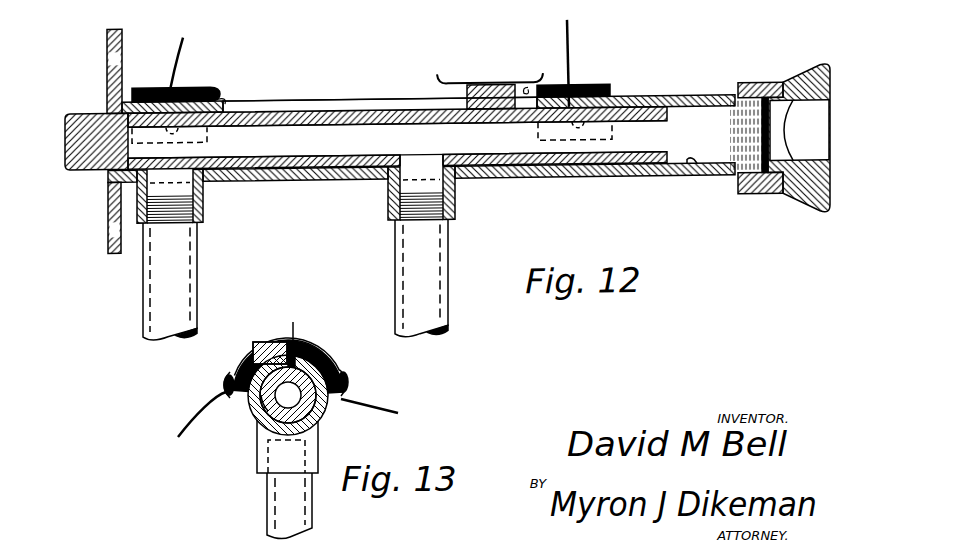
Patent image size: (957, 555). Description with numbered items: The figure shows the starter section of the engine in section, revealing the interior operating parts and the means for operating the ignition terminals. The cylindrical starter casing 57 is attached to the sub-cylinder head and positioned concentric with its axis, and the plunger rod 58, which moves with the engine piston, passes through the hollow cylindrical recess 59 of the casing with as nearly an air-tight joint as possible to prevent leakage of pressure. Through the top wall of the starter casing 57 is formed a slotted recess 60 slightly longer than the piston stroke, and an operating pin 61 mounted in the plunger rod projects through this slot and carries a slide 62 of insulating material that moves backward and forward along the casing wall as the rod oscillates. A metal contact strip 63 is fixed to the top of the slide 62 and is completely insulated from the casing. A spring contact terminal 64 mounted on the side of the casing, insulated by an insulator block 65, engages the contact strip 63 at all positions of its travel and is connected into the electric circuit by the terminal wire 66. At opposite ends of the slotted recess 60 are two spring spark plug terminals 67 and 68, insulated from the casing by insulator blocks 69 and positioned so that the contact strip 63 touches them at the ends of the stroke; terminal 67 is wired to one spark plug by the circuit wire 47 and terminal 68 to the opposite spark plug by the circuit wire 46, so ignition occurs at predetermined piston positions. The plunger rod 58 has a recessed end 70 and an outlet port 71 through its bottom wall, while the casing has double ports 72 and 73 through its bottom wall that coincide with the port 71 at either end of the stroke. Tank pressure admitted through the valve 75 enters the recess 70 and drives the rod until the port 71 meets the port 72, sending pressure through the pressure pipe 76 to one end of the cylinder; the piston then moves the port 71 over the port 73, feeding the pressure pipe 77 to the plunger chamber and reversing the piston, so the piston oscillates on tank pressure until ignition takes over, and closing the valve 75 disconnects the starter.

In FIG. 12, the circuit wire 46 is at (184, 43).
In FIG. 13, the circuit wire 46 is at (386, 402).
In FIG. 12, the circuit wire 47 is at (569, 36).
In FIG. 12, the starter casing 57 is at (668, 107).
In FIG. 13, the starter casing 57 is at (322, 410).
In FIG. 12, the plunger rod 58 is at (668, 135).
In FIG. 13, the plunger rod 58 is at (317, 418).
In FIG. 12, the hollow cylindrical recess 59 is at (690, 175).
In FIG. 12, the slotted recess 60 is at (403, 103).
In FIG. 13, the slotted recess 60 is at (293, 322).
In FIG. 12, the operating pin 61 is at (490, 130).
In FIG. 13, the operating pin 61 is at (258, 408).
In FIG. 12, the slide 62 is at (467, 99).
In FIG. 13, the slide 62 is at (281, 341).
In FIG. 12, the metal contact strip 63 is at (505, 84).
In FIG. 13, the metal contact strip 63 is at (270, 343).
In FIG. 13, the spring contact terminal 64 is at (237, 363).
In FIG. 13, the insulator block 65 is at (232, 398).
In FIG. 13, the terminal wire 66 is at (196, 420).
In FIG. 12, the spring spark plug terminal 67 is at (610, 93).
In FIG. 12, the spring spark plug terminal 68 is at (192, 87).
In FIG. 13, the spring spark plug terminal 68 is at (318, 362).
In FIG. 12, the insulator blocks 69 is at (230, 101).
In FIG. 13, the insulator blocks 69 is at (327, 400).
In FIG. 12, the recessed end 70 is at (633, 148).
In FIG. 13, the recessed end 70 is at (286, 398).
In FIG. 12, the outlet port 71 is at (412, 164).
In FIG. 13, the outlet port 71 is at (265, 413).
In FIG. 12, the port 72 is at (203, 197).
In FIG. 12, the port 73 is at (432, 174).
In FIG. 12, the valve 75 is at (757, 201).
In FIG. 12, the pressure pipe 76 is at (198, 239).
In FIG. 13, the pressure pipe 76 is at (312, 490).
In FIG. 12, the pressure pipe 77 is at (448, 242).